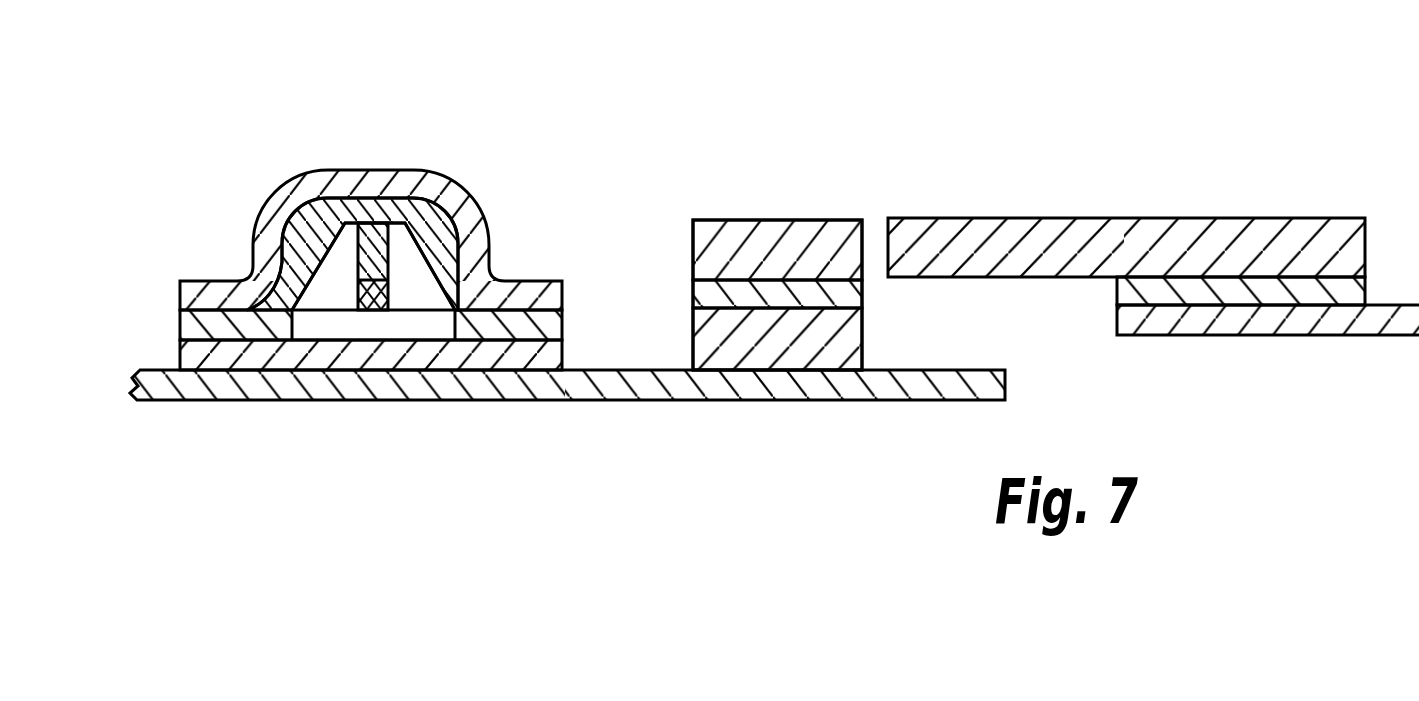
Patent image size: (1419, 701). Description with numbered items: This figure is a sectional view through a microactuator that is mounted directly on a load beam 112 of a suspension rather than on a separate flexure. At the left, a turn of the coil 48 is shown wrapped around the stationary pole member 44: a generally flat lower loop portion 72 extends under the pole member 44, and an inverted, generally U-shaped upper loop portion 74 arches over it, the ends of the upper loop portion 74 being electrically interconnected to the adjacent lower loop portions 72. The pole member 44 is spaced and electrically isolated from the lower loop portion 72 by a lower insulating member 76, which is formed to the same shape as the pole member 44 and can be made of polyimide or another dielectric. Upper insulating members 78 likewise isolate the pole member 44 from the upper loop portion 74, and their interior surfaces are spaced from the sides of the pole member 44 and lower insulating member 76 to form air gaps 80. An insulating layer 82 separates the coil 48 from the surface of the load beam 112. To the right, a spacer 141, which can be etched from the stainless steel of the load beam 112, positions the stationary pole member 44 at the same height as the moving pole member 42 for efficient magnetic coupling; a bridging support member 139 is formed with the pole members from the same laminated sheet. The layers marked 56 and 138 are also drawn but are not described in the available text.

The coil 48 is at (391, 175).
The pole member 44 is at (363, 228).
The upper loop portion 74 is at (356, 171).
The upper insulating member 78 is at (315, 225).
The air gap 80 is at (338, 268).
The lower insulating member 76 is at (388, 284).
The lower loop portion 72 is at (197, 323).
The insulating layer 82 is at (205, 358).
The load beam 112 is at (150, 388).
The conductive layer 56 is at (810, 233).
The spacer 141 is at (713, 337).
The moving pole member 42 is at (1095, 218).
The bridging support member 139 is at (1122, 293).
The conductor 138 is at (1253, 337).